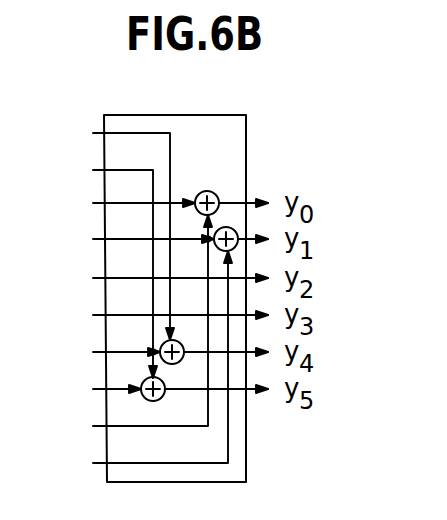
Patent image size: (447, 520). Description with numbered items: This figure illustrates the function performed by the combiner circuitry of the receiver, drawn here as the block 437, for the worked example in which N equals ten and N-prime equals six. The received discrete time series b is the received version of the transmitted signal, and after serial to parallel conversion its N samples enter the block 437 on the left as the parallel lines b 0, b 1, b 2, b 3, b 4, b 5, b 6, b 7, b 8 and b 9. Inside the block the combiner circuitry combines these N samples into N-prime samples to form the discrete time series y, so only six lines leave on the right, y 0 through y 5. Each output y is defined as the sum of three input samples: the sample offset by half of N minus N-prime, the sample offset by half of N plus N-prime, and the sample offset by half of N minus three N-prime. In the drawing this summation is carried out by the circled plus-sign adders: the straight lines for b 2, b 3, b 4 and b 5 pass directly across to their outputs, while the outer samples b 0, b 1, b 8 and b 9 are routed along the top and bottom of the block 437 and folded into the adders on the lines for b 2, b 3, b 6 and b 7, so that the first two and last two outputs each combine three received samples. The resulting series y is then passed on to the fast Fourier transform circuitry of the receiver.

The syndrome generator XOR network 437 is at (167, 116).
The input bit line b0 0 is at (110, 228).
The input bit line b1 1 is at (101, 265).
The input bit line b2 2 is at (157, 207).
The input bit line b3 3 is at (157, 243).
The input bit line b4 4 is at (157, 282).
The input bit line b5 5 is at (157, 319).
The input bit line b6 6 is at (157, 356).
The input bit line b7 7 is at (157, 393).
The input bit line b8 8 is at (129, 333).
The input bit line b9 9 is at (139, 370).